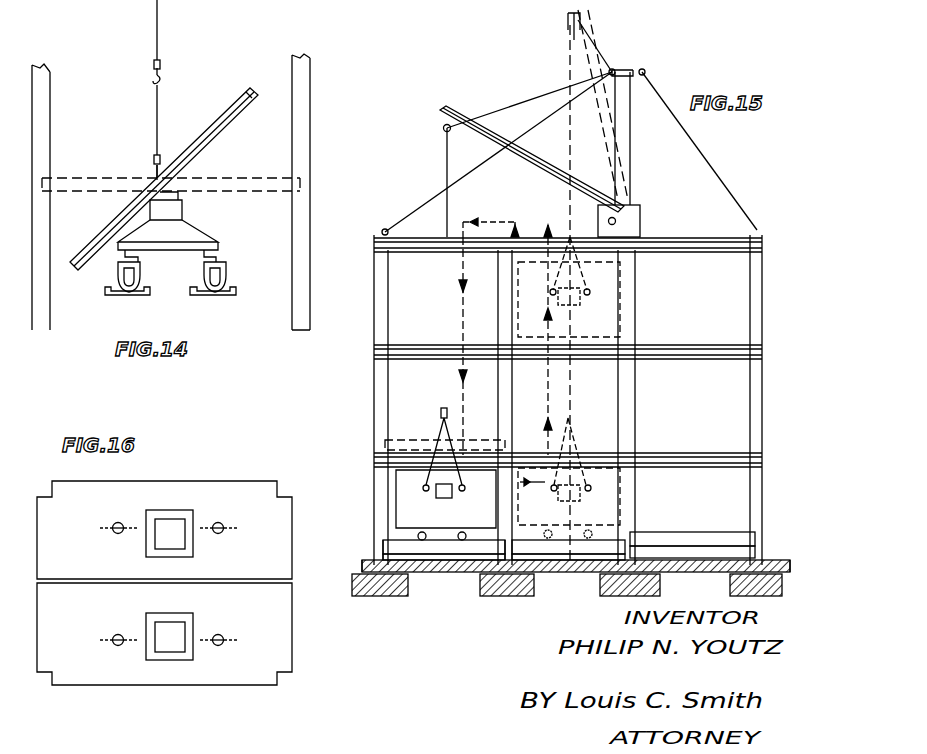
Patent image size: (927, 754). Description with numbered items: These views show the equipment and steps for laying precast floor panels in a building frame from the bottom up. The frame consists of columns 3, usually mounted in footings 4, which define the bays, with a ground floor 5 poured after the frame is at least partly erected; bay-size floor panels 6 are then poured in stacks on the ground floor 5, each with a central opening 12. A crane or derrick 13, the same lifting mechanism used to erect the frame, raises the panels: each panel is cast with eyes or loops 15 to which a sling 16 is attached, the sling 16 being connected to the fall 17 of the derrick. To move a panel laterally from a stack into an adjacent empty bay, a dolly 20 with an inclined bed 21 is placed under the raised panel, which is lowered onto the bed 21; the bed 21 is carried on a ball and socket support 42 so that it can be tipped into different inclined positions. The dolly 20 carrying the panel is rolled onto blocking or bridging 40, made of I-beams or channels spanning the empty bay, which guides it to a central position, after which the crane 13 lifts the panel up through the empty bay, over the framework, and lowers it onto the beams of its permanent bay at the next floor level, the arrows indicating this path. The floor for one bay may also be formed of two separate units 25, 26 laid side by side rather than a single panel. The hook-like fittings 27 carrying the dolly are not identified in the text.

In FIG. 14, the columns 3 is at (50, 99).
In FIG. 15, the columns 3 is at (752, 297).
In FIG. 15, the footings 4 is at (728, 584).
In FIG. 15, the ground floor 5 is at (578, 565).
In FIG. 14, the floor panels 6 is at (208, 128).
In FIG. 15, the floor panels 6 is at (405, 505).
In FIG. 16, the central opening 12 is at (166, 522).
In FIG. 15, the central opening 12 is at (580, 300).
In FIG. 15, the crane or derrick 13 is at (535, 175).
In FIG. 16, the eyes or loops 15 is at (104, 526).
In FIG. 14, the sling 16 is at (157, 134).
In FIG. 15, the sling 16 is at (620, 272).
In FIG. 14, the fall 17 is at (157, 25).
In FIG. 15, the fall 17 is at (568, 60).
In FIG. 14, the dolly 20 is at (178, 229).
In FIG. 14, the inclined bed 21 is at (235, 128).
In FIG. 16, the floor unit 25 is at (262, 562).
In FIG. 16, the floor unit 26 is at (262, 667).
In FIG. 14, the hook 27 is at (130, 285).
In FIG. 15, the hook 27 is at (396, 539).
In FIG. 14, the blocking or bridging 40 is at (106, 293).
In FIG. 15, the blocking or bridging 40 is at (552, 570).
In FIG. 14, the ball and socket support 42 is at (185, 186).